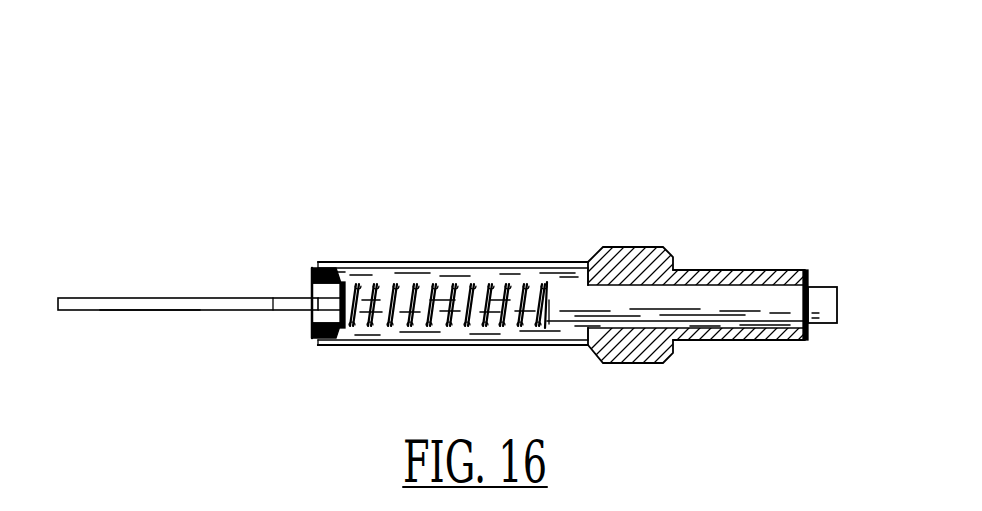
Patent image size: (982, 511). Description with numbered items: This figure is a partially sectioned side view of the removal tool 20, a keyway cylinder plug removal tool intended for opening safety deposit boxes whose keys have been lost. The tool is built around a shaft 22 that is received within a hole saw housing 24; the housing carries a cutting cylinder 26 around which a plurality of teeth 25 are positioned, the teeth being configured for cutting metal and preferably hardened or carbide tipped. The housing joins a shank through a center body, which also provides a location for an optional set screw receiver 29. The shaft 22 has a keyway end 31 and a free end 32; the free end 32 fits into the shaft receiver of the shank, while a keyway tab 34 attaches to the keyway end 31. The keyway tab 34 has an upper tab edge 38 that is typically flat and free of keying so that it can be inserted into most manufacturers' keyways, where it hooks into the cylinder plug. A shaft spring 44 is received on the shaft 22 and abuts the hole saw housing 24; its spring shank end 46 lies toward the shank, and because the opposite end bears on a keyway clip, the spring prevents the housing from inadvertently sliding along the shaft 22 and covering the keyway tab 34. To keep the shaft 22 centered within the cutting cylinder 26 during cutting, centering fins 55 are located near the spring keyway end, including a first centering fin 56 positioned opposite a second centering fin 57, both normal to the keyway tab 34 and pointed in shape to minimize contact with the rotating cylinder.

The removal tool 20 is at (517, 158).
The shaft 22 is at (560, 318).
The hole saw housing 24 is at (562, 212).
The teeth 25 is at (318, 349).
The cutting cylinder 26 is at (374, 348).
The set screw receiver 29 is at (618, 247).
The keyway end 31 is at (308, 290).
The free end 32 is at (825, 312).
The keyway tab 34 is at (147, 297).
The upper tab edge 38 is at (133, 308).
The shaft spring 44 is at (469, 290).
The spring shank end 46 is at (540, 318).
The centering fins 55 is at (284, 262).
The first centering fin 56 is at (314, 342).
The second centering fin 57 is at (313, 266).